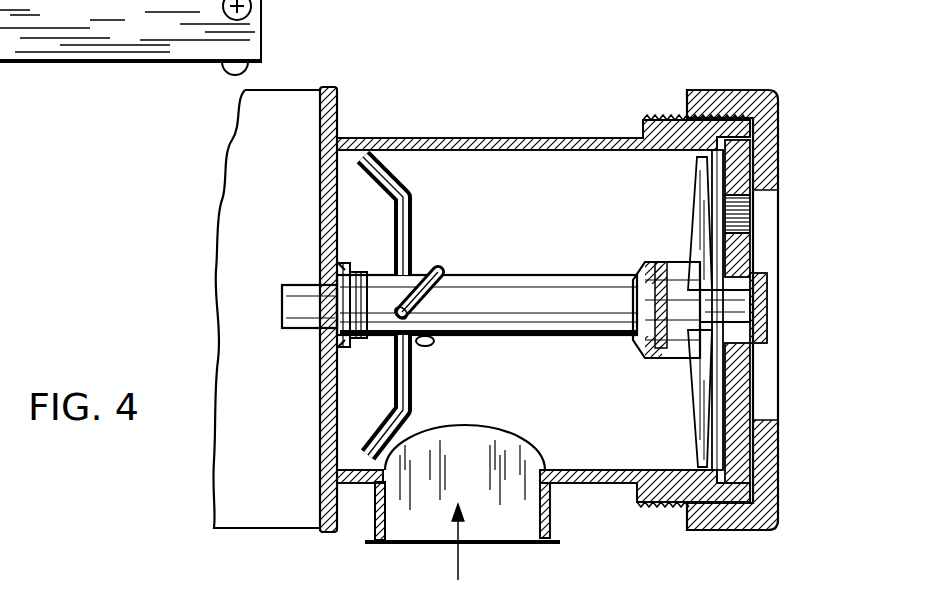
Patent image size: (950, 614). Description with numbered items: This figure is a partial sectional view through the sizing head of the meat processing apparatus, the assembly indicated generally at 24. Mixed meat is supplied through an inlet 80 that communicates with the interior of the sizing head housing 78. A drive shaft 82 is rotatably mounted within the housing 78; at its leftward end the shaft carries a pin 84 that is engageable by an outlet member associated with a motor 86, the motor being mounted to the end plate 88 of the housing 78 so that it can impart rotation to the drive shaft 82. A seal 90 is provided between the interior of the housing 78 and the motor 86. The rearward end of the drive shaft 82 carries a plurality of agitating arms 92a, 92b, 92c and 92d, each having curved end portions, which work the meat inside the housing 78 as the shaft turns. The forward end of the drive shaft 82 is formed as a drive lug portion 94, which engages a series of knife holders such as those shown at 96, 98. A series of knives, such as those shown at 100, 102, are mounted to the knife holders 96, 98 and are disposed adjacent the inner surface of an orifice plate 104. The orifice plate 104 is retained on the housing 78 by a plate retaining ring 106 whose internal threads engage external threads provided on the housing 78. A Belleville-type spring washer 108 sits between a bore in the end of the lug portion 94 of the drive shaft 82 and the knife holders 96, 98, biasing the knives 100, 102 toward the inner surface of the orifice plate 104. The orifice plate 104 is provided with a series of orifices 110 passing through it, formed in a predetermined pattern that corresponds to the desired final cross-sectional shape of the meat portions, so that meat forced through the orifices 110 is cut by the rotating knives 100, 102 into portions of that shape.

The tensioner assembly 24 is at (563, 66).
The sizing head housing 78 is at (535, 138).
The inlet 80 is at (551, 506).
The drive shaft 82 is at (505, 275).
The pin 84 is at (305, 284).
The motor 86 is at (226, 205).
The end plate 88 is at (322, 170).
The seal 90 is at (340, 258).
The agitating arm 92a is at (413, 187).
The agitating arm 92b is at (427, 345).
The agitating arm 92c is at (413, 412).
The agitating arm 92d is at (434, 268).
The drive lug portion 94 is at (664, 257).
The knife holder 96 is at (697, 186).
The knife holder 98 is at (688, 383).
The knife 100 is at (753, 247).
The knife 102 is at (717, 373).
The orifice plate 104 is at (753, 187).
The plate retaining ring 106 is at (732, 90).
The Belleville-type spring washer 108 is at (647, 350).
The orifices 110 is at (758, 218).